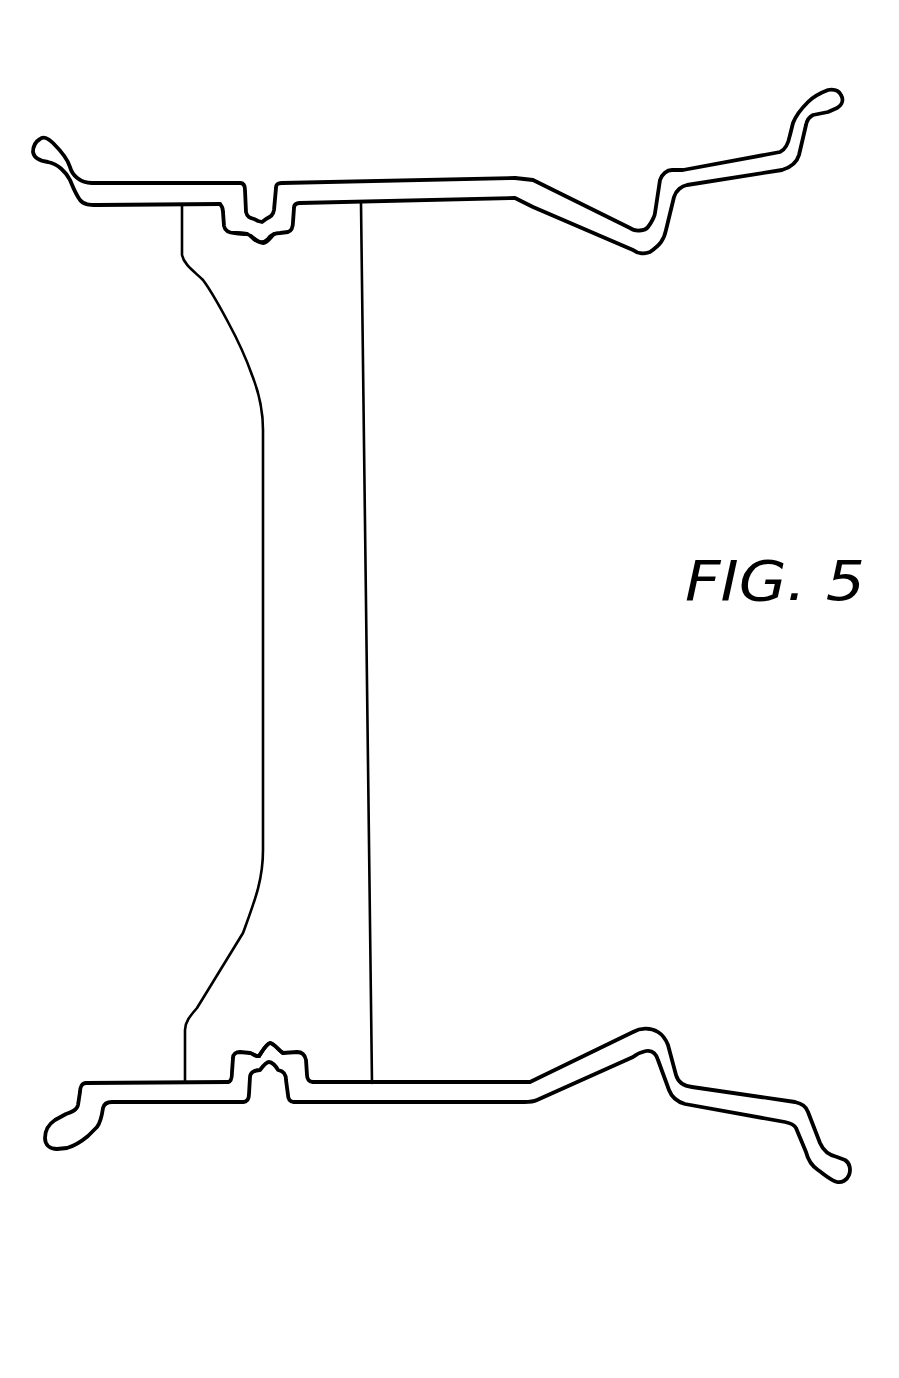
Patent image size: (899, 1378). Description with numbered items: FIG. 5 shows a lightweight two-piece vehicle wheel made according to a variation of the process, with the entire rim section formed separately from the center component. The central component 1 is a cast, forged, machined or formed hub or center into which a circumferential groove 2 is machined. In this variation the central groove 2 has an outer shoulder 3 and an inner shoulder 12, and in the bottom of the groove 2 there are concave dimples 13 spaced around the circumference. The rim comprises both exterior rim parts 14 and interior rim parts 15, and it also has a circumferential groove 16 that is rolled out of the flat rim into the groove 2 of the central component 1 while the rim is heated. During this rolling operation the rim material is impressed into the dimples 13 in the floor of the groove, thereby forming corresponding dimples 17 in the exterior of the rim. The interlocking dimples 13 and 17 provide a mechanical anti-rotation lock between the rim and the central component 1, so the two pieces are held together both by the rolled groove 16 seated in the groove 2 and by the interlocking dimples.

The central component 1 is at (234, 335).
The circumferential groove 2 is at (213, 244).
The outer shoulder 3 is at (305, 212).
The inner shoulder 12 is at (212, 215).
The concave dimples 13 is at (263, 248).
The exterior rim parts 14 is at (535, 178).
The interior rim parts 15 is at (35, 135).
The circumferential groove 16 is at (259, 203).
The dimples 17 is at (270, 227).